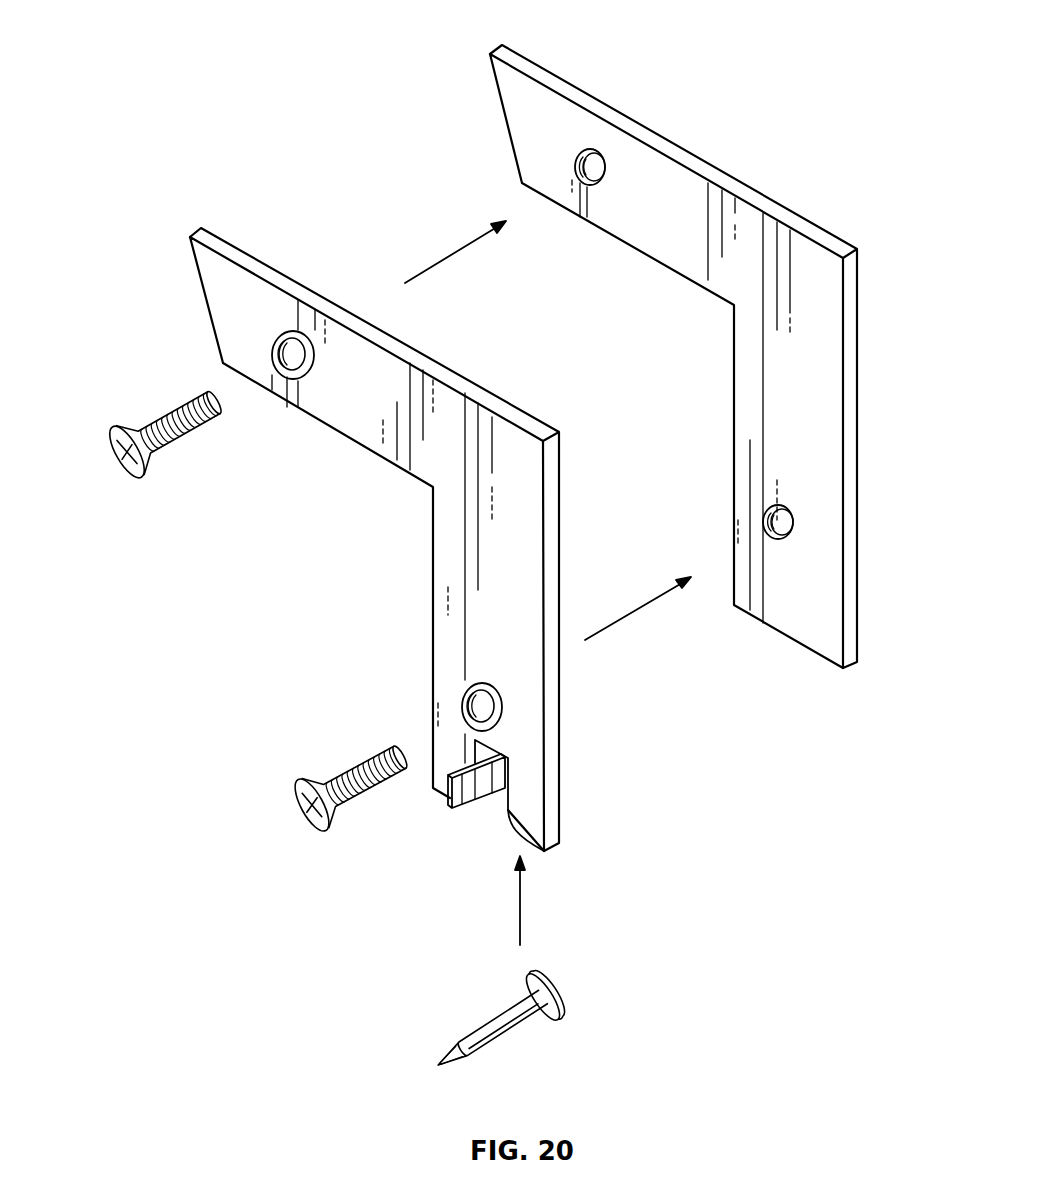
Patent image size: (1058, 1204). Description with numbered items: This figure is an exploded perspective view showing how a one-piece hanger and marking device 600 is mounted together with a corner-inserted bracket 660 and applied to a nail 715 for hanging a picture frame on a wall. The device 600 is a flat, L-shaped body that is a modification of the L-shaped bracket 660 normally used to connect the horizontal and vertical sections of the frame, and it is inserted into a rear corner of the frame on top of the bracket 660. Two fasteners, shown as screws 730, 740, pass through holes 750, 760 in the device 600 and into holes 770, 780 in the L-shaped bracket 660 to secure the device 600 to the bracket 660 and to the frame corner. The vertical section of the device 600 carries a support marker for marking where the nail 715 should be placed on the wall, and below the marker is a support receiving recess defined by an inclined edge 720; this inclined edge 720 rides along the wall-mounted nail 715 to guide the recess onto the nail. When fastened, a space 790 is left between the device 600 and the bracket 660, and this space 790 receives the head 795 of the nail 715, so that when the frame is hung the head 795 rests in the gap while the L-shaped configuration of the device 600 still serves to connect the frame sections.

The one-piece hanger and marking device 600 is at (494, 350).
The corner-inserted bracket 660 is at (818, 162).
The nail 715 is at (540, 1035).
The inclined edge 720 is at (502, 813).
The fastener 730 is at (146, 411).
The fastener 740 is at (331, 770).
The hole 750 is at (296, 333).
The hole 760 is at (498, 712).
The hole 770 is at (592, 150).
The hole 780 is at (792, 527).
The space 790 is at (695, 768).
The head 795 is at (565, 1035).